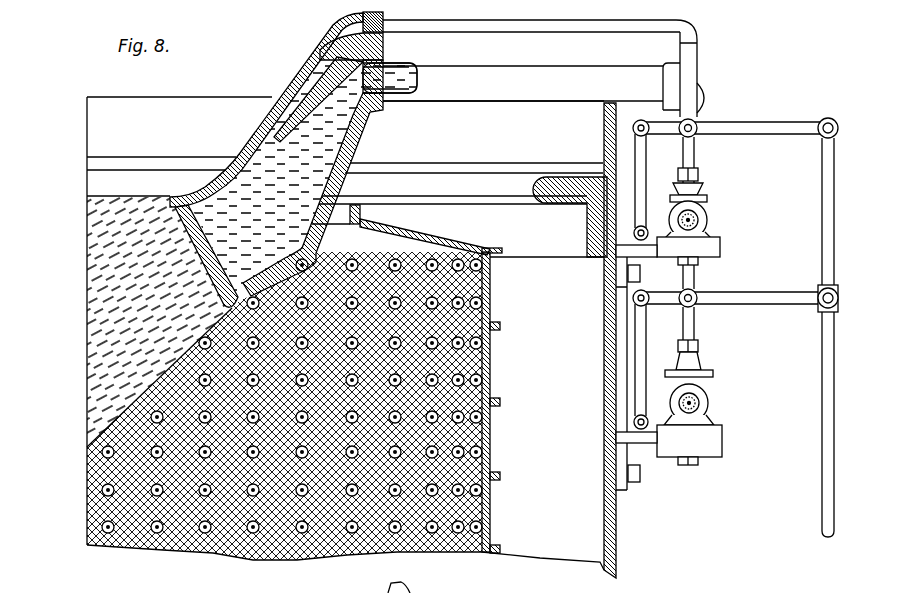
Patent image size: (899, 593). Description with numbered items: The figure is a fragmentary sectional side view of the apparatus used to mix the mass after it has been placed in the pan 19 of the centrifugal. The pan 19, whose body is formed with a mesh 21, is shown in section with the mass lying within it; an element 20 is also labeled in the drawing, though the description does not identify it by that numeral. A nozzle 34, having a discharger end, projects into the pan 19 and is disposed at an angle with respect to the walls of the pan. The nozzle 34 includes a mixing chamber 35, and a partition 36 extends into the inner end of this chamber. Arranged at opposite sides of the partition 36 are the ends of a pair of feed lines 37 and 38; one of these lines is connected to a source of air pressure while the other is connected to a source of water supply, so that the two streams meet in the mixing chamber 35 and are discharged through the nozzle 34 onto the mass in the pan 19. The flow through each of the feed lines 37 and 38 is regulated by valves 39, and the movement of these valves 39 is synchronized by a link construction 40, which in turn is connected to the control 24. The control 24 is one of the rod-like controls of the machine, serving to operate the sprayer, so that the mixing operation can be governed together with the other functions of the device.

The pan 19 is at (418, 236).
The perforated cement body / column 20 is at (490, 377).
The mesh 21 is at (490, 330).
The control 24 is at (822, 432).
The nozzle 34 is at (252, 141).
The mixing chamber 35 is at (338, 152).
The partition 36 is at (320, 72).
The feed line 37 is at (490, 22).
The feed line 38 is at (561, 60).
The valves 39 is at (697, 221).
The link construction 40 is at (756, 131).